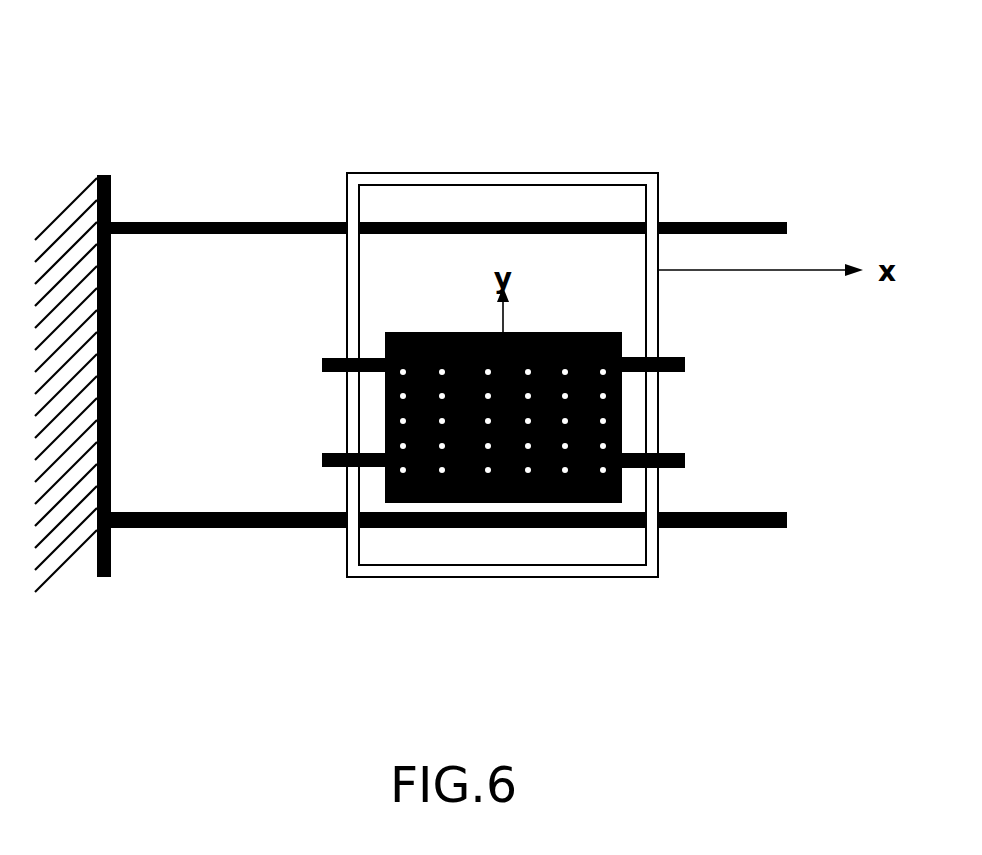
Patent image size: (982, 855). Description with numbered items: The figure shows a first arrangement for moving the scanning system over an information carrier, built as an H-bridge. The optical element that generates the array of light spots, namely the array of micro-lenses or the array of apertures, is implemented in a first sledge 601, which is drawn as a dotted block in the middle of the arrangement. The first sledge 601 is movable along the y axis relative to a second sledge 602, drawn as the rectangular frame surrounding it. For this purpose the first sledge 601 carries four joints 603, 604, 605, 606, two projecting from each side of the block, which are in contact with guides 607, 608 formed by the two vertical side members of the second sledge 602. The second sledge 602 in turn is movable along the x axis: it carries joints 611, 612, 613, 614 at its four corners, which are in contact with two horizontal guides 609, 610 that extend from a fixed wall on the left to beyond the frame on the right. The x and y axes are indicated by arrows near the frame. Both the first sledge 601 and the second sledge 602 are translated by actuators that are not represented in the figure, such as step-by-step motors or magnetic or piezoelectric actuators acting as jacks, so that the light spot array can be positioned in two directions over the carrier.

The first sledge 601 is at (434, 332).
The second sledge 602 is at (490, 173).
The joint 603 is at (333, 360).
The joint 604 is at (340, 453).
The joint 605 is at (660, 358).
The joint 606 is at (660, 454).
The guide 607 is at (347, 340).
The guide 608 is at (646, 328).
The guide 609 is at (200, 222).
The guide 610 is at (212, 529).
The joint 611 is at (336, 222).
The joint 612 is at (660, 222).
The joint 613 is at (345, 537).
The joint 614 is at (660, 528).